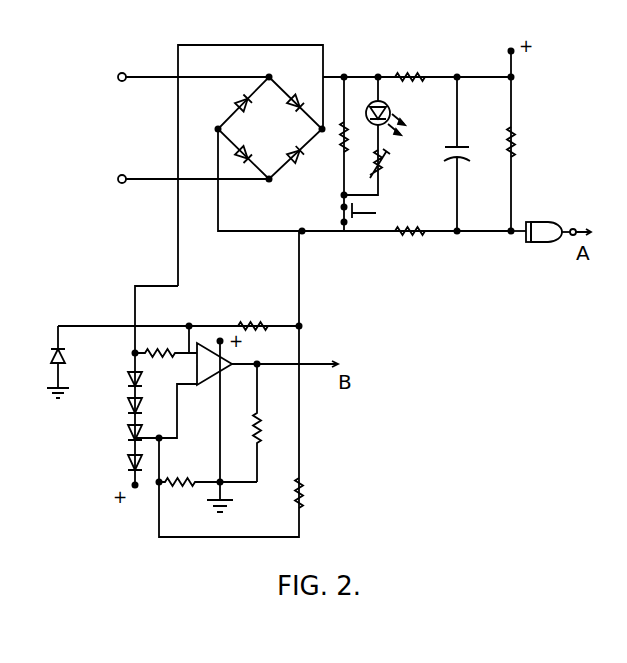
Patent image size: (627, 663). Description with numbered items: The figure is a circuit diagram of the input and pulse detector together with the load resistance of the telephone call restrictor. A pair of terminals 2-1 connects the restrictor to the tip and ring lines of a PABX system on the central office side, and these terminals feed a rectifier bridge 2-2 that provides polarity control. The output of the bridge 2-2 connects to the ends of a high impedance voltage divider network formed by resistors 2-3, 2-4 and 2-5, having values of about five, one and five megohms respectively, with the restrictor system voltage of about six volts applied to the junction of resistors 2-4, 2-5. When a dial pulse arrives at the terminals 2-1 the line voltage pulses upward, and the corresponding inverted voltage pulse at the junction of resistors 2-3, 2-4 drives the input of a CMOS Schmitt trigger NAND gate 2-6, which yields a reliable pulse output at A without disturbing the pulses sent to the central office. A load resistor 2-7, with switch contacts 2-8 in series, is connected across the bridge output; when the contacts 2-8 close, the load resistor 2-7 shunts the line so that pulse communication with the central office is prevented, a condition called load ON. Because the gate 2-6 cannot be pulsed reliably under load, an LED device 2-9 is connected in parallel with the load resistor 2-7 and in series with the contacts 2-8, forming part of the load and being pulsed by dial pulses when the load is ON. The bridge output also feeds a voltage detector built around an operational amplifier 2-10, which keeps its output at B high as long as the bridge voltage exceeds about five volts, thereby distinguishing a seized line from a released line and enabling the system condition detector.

The pair of terminals 2-1 is at (120, 81).
The rectifier bridge 2-2 is at (270, 128).
The resistor 2-3 is at (400, 227).
The resistor 2-4 is at (516, 139).
The resistor 2-5 is at (412, 73).
The CMOS Schmitt trigger NAND gate 2-6 is at (540, 225).
The load resistor 2-7 is at (340, 152).
The switch contacts 2-8 is at (340, 208).
The LED device 2-9 is at (390, 106).
The operational amplifier 2-10 is at (234, 361).